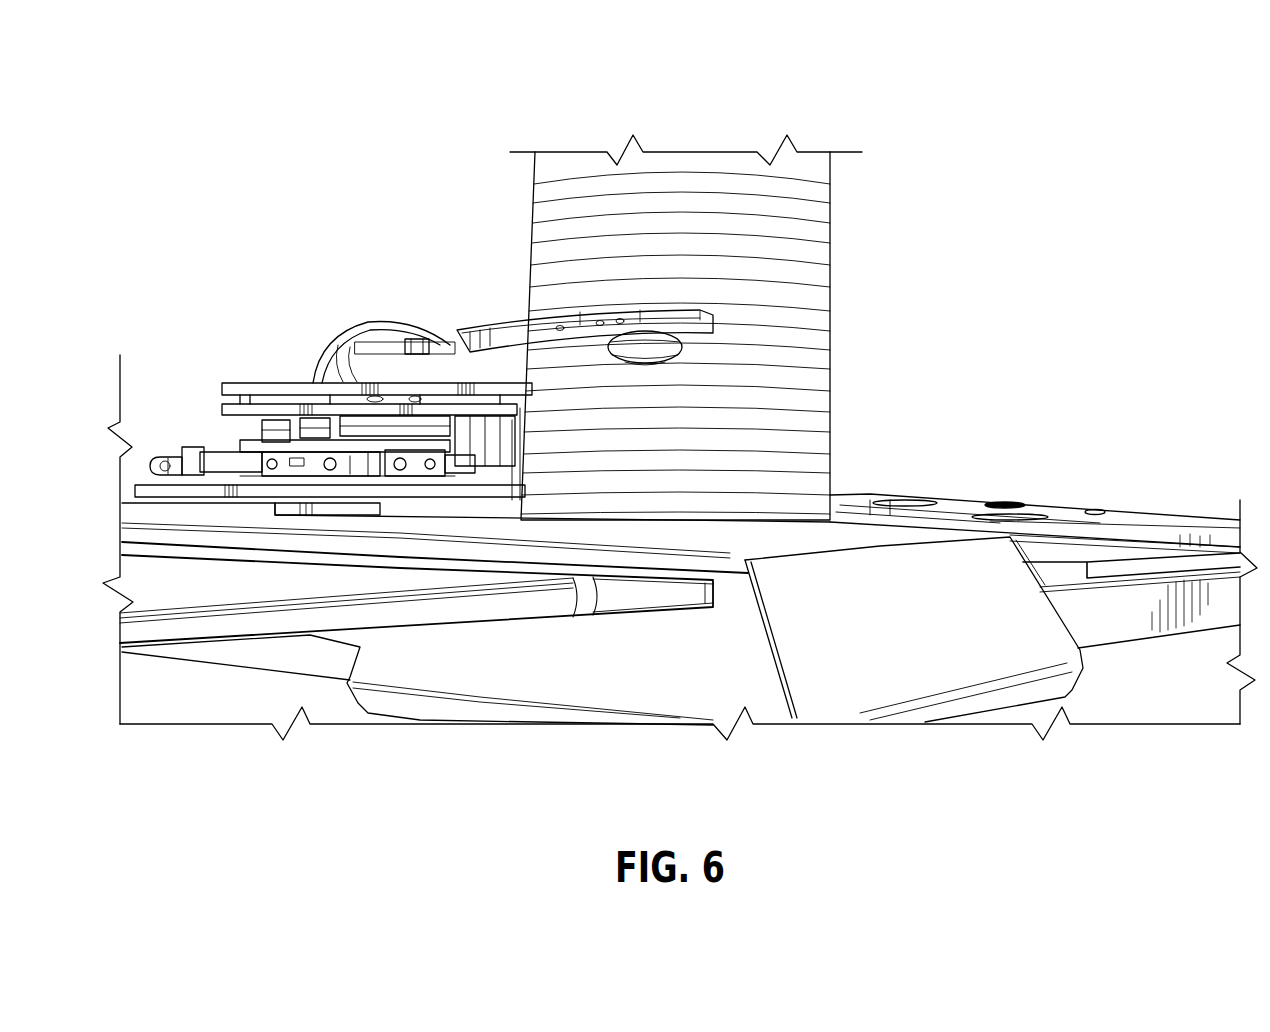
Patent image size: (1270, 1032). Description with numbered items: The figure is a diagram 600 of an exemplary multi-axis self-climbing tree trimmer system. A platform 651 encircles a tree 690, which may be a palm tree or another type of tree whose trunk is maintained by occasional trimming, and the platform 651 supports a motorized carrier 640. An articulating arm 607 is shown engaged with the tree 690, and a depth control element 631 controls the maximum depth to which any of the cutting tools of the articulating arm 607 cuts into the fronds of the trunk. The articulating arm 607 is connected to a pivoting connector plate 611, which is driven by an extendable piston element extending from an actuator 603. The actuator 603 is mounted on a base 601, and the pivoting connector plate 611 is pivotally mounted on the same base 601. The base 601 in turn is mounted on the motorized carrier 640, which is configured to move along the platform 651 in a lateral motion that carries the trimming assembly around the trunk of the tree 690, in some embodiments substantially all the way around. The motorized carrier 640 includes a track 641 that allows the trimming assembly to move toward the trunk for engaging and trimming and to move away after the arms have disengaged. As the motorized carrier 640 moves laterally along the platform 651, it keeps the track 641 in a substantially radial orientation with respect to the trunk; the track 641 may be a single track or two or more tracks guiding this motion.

The diagram 600 is at (983, 118).
The tree 690 is at (830, 208).
The platform 651 is at (1090, 512).
The depth control element 631 is at (705, 345).
The articulating arm 607 is at (457, 330).
The actuator 603 is at (342, 343).
The pivoting connector plate 611 is at (403, 345).
The base 601 is at (250, 383).
The motorized carrier 640 is at (215, 428).
The track 641 is at (160, 462).